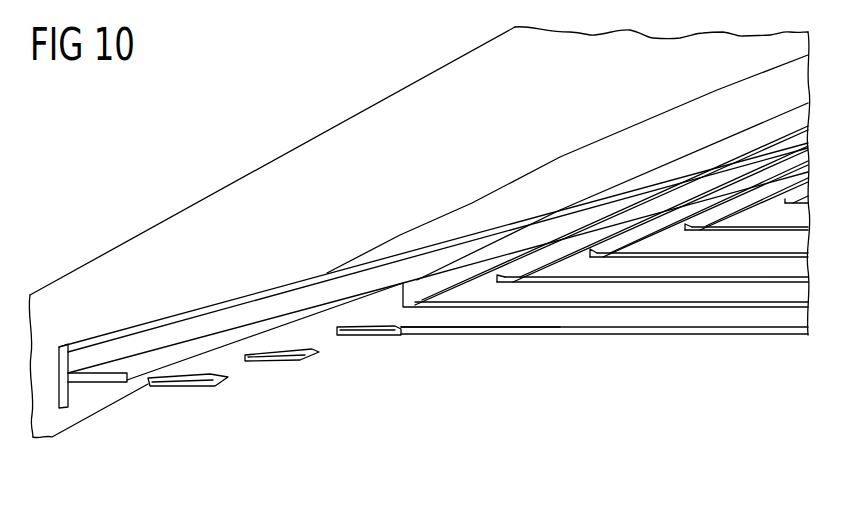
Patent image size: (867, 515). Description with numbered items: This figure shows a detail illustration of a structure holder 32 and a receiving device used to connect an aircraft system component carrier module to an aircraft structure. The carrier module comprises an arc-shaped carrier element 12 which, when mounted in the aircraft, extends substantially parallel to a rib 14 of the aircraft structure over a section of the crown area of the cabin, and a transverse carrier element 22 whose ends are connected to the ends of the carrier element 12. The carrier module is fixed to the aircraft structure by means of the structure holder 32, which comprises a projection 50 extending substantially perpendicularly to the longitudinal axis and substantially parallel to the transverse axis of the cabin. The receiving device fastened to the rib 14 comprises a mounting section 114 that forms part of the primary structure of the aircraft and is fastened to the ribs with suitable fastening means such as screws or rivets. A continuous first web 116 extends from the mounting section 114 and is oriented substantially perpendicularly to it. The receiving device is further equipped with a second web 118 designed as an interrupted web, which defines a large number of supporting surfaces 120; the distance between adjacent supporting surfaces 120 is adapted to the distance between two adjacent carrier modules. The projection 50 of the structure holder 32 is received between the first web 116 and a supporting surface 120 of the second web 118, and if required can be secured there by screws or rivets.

The rib 14 is at (332, 143).
The carrier element 12 is at (707, 162).
The transverse carrier element 22 is at (683, 320).
The first web 116 is at (252, 330).
The mounting section 114 is at (82, 392).
The supporting surfaces 120 is at (287, 357).
The projection 50 is at (387, 320).
The second web 118 is at (185, 391).
The structure holder 32 is at (414, 343).